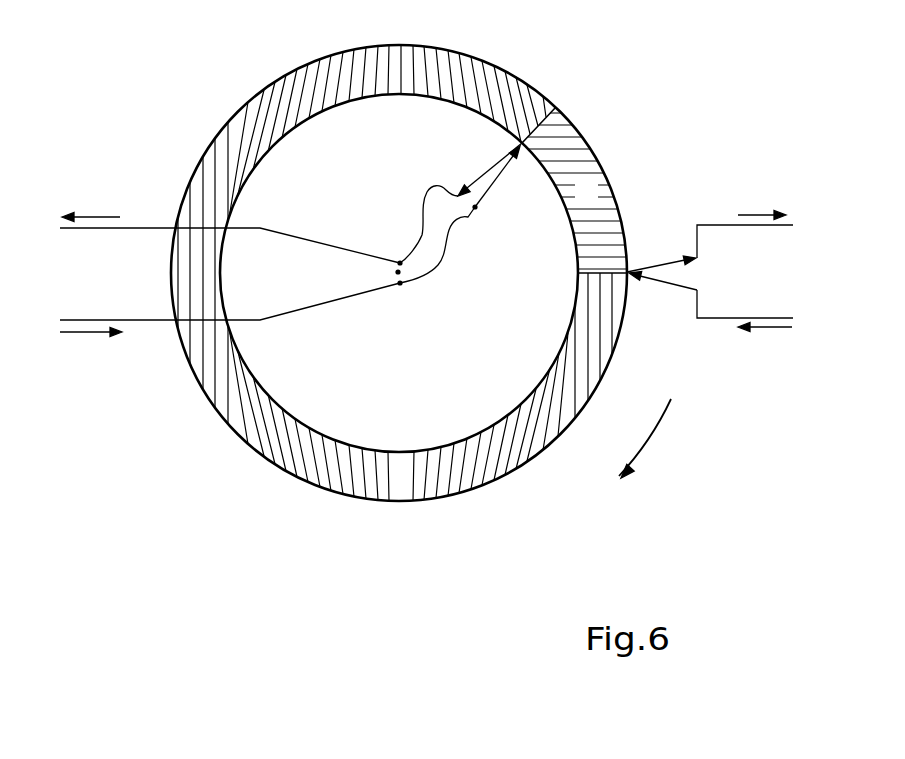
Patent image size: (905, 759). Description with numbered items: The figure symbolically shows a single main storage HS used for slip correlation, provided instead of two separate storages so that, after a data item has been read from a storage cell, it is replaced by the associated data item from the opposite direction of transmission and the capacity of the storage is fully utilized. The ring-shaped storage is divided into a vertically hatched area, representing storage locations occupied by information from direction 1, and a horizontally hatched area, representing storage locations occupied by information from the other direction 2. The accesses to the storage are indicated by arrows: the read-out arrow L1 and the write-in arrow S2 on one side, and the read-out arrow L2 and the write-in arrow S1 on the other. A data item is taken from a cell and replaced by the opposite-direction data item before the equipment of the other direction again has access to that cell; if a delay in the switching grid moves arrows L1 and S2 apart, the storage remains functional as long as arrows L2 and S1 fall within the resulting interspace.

The main storage HS is at (262, 88).
The direction 1 is at (646, 173).
The direction 2 is at (422, 520).
The arrow L1 is at (665, 259).
The arrow L2 is at (488, 171).
The arrow S1 is at (496, 179).
The arrow S2 is at (665, 285).